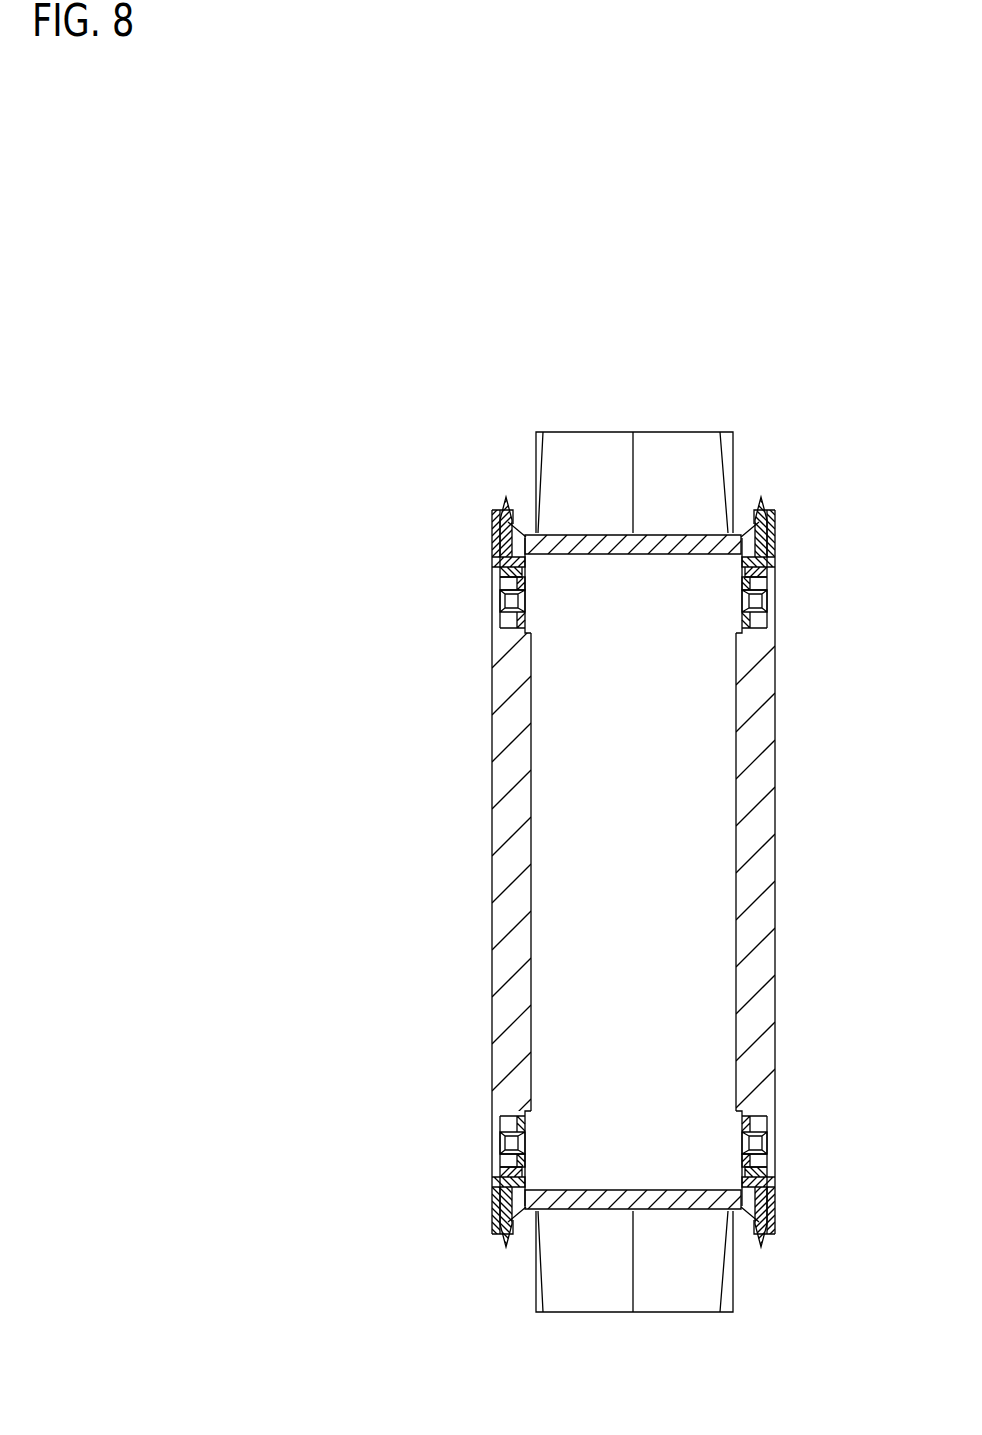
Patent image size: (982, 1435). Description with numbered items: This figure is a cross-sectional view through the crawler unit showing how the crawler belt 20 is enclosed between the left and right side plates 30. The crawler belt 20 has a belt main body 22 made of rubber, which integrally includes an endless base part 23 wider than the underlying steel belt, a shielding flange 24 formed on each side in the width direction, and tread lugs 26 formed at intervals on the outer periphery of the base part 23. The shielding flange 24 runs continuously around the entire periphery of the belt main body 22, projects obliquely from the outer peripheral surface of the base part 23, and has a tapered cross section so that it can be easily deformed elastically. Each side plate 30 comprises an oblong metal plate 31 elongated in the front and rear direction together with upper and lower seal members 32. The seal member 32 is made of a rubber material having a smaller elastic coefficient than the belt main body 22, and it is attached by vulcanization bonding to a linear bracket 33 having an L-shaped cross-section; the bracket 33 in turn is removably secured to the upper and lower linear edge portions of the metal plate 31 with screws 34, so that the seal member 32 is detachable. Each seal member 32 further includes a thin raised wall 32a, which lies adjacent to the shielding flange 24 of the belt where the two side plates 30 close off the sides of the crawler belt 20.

The crawler belt 20 is at (743, 432).
The belt main body 22 is at (662, 535).
The base part 23 is at (605, 533).
The shielding flange 24 is at (527, 532).
The tread lug 26 is at (650, 530).
The side plate 30 is at (491, 880).
The metal plate 31 is at (492, 735).
The seal member 32 is at (493, 548).
The thin raised wall 32a is at (493, 512).
The bracket 33 is at (528, 588).
The screw 34 is at (493, 605).